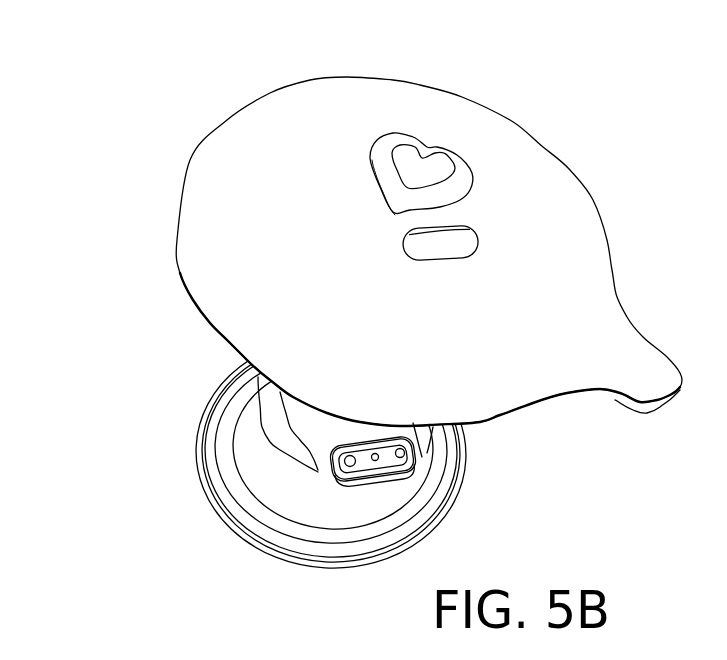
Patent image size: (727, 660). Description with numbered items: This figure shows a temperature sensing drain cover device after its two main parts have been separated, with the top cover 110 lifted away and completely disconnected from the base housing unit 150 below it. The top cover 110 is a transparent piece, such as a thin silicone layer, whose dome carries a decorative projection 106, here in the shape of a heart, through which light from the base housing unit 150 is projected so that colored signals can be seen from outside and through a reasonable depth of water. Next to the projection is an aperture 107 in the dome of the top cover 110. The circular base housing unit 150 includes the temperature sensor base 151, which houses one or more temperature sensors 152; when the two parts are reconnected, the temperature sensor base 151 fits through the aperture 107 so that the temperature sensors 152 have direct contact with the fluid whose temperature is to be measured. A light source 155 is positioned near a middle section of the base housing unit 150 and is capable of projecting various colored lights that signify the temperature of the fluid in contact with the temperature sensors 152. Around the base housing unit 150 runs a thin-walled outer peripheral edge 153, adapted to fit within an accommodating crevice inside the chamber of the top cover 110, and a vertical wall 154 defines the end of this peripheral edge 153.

The top cover 110 is at (462, 97).
The decorative projection 106 is at (380, 162).
The aperture 107 is at (458, 252).
The base housing unit 150 is at (458, 503).
The temperature sensor base 151 is at (393, 468).
The temperature sensors 152 is at (348, 462).
The outer peripheral edge 153 is at (243, 524).
The vertical wall 154 is at (219, 451).
The light source 155 is at (290, 403).